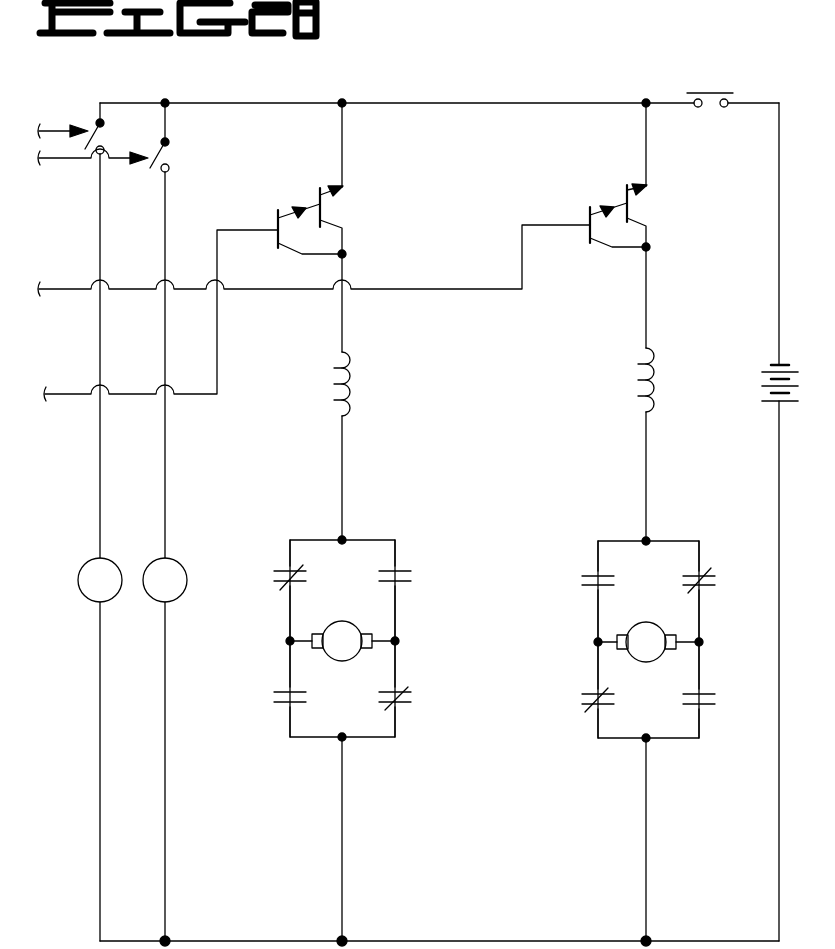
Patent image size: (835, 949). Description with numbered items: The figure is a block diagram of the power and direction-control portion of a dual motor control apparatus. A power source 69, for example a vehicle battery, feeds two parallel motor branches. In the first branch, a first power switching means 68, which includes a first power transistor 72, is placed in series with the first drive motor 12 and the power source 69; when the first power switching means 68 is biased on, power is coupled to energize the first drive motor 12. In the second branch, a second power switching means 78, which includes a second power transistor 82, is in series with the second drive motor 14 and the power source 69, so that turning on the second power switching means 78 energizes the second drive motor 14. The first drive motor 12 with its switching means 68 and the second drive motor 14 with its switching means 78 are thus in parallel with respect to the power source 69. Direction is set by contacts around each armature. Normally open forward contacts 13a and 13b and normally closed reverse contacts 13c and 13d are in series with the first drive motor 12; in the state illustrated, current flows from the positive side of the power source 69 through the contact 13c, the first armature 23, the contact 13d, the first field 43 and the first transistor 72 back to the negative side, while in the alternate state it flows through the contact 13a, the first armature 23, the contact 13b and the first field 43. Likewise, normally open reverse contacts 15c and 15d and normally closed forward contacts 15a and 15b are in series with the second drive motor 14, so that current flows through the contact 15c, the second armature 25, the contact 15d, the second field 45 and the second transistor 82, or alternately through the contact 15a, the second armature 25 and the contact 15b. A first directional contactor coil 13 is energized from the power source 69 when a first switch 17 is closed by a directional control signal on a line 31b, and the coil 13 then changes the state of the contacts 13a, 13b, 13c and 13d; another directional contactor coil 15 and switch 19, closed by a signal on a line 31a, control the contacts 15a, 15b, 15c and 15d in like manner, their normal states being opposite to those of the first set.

The first drive motor 12 is at (612, 486).
The second drive motor 14 is at (378, 485).
The first directional contactor coil 13 is at (152, 563).
The directional contactor coil 15 is at (86, 565).
The first switch 17 is at (182, 146).
The switch 19 is at (137, 128).
The first armature 23 is at (648, 622).
The second armature 25 is at (340, 622).
The line 31a is at (50, 127).
The line 31b is at (63, 167).
The first field 43 is at (656, 368).
The second field 45 is at (352, 370).
The first power switching means 68 is at (598, 255).
The first power transistor 72 is at (620, 178).
The second power switching means 78 is at (278, 258).
The second power transistor 82 is at (322, 178).
The power source 69 is at (748, 420).
The forward contact 13a is at (708, 692).
The forward contact 13b is at (586, 576).
The reverse contact 13c is at (585, 690).
The reverse contact 13d is at (711, 573).
The forward contact 15a is at (405, 690).
The forward contact 15b is at (280, 566).
The reverse contact 15c is at (274, 692).
The reverse contact 15d is at (404, 570).